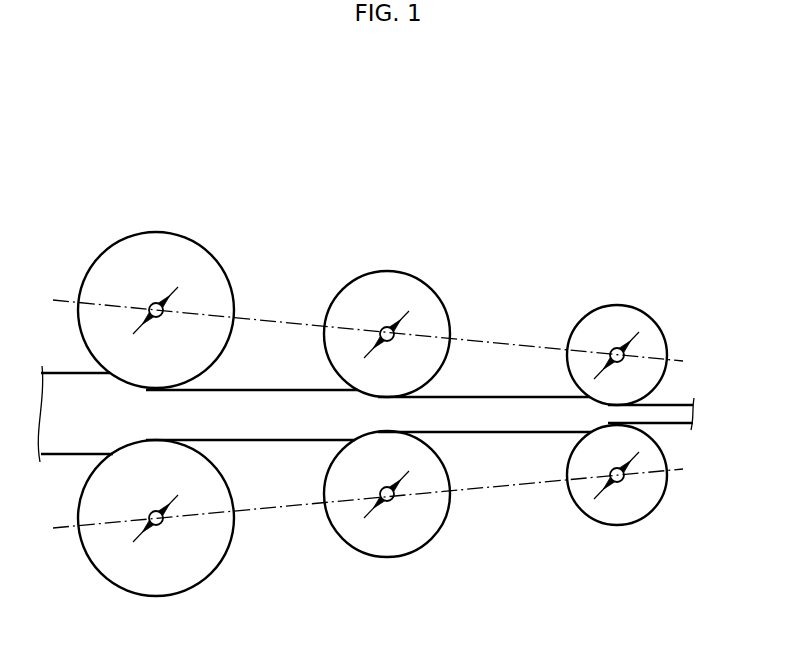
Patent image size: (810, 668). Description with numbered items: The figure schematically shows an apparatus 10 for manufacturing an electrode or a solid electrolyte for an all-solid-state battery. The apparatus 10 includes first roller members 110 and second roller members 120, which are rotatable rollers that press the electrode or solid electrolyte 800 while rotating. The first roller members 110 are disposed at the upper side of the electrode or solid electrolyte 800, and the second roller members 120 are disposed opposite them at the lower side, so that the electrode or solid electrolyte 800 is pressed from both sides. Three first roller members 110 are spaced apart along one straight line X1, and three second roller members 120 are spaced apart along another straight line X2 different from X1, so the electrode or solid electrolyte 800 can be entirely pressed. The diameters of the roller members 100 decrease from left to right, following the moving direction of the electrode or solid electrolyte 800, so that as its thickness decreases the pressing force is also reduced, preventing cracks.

The apparatus for manufacturing an electrode or a solid electrolyte 10 is at (264, 140).
The roller members 100 is at (251, 214).
The first roller member 110 is at (156, 231).
The second roller member 120 is at (156, 597).
The electrode or solid electrolyte 800 is at (696, 415).
The straight line X1 is at (383, 337).
The straight line X2 is at (383, 491).